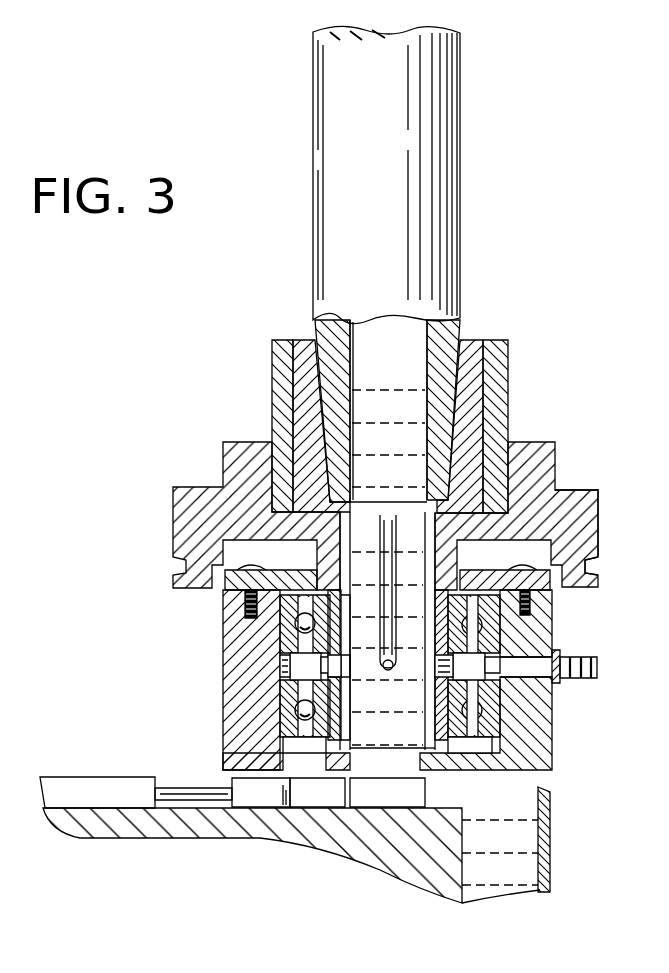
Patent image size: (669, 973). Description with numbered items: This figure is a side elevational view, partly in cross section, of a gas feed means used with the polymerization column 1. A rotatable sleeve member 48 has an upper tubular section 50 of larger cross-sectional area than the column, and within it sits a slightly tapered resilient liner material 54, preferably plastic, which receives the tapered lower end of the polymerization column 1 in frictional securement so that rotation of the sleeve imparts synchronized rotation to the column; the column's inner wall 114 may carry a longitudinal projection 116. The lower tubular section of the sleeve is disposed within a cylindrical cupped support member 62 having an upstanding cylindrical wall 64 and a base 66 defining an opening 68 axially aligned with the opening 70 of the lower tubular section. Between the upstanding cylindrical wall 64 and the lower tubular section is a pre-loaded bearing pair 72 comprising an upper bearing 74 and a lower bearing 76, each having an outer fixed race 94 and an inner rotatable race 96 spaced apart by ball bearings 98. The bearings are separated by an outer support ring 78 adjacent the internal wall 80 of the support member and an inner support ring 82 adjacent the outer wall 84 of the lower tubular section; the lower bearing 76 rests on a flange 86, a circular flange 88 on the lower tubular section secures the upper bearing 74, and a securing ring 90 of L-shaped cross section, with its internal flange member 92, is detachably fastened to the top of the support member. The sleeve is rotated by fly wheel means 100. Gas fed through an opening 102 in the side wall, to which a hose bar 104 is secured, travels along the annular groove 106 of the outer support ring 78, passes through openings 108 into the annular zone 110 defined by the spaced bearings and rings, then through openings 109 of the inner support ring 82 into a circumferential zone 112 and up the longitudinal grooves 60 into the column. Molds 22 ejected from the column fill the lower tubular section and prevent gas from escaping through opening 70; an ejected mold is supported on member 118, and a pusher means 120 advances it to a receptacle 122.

The polymerization column 1 is at (465, 222).
The resilient liner material 54 is at (468, 344).
The upper tubular section 50 is at (278, 400).
The rotatable sleeve member 48 is at (510, 406).
The fly wheel means 100 is at (565, 490).
The securing ring 90 is at (586, 568).
The longitudinal projection 116 is at (353, 375).
The inner wall 114 is at (427, 370).
The longitudinal grooves 60 is at (397, 530).
The cylindrical cupped support member 62 is at (231, 655).
The pre-loaded bearing pair 72 is at (282, 628).
The internal flange member 92 is at (285, 590).
The upper bearing 74 is at (290, 655).
The inner rotatable race 96 is at (312, 618).
The annular groove 106 is at (282, 666).
The openings 108 is at (282, 690).
The lower bearing 76 is at (284, 732).
The outer wall 84 is at (343, 612).
The inner support ring 82 is at (343, 642).
The circumferential zone 112 is at (343, 682).
The upstanding cylindrical wall 64 is at (507, 659).
The outer support ring 78 is at (505, 652).
The internal wall 80 is at (500, 697).
The circular flange 88 is at (466, 600).
The ball bearings 98 is at (480, 600).
The outer fixed race 94 is at (500, 625).
The annular zone 110 is at (452, 642).
The openings 109 is at (448, 682).
The flange 86 is at (478, 748).
The opening 102 is at (538, 670).
The hose bar 104 is at (598, 667).
The opening 70 is at (378, 755).
The opening 68 is at (406, 766).
The molds 22 is at (420, 790).
The base 66 is at (312, 778).
The member 118 is at (330, 840).
The receptacle 122 is at (548, 806).
The pusher means 120 is at (103, 790).